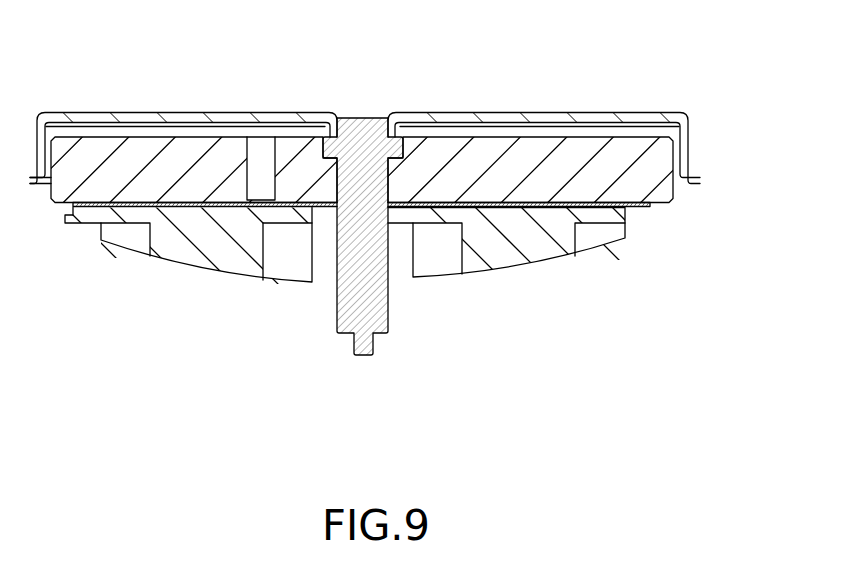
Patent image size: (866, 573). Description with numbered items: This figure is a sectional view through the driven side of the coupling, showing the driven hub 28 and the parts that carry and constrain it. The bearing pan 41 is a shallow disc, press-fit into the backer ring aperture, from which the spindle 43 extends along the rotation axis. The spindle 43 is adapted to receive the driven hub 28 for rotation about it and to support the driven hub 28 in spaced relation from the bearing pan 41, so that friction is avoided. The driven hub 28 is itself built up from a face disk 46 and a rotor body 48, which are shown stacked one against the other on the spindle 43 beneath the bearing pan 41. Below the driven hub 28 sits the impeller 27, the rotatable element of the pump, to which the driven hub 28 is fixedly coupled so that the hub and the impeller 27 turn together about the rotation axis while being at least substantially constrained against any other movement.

The bearing pan 41 is at (583, 112).
The rotor body 48 is at (640, 183).
The face disk 46 is at (633, 207).
The driven hub 28 is at (435, 231).
The impeller 27 is at (208, 243).
The spindle 43 is at (353, 308).